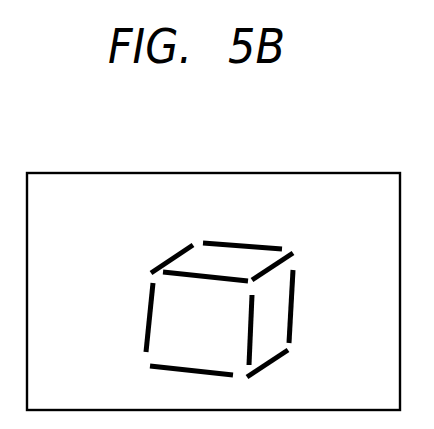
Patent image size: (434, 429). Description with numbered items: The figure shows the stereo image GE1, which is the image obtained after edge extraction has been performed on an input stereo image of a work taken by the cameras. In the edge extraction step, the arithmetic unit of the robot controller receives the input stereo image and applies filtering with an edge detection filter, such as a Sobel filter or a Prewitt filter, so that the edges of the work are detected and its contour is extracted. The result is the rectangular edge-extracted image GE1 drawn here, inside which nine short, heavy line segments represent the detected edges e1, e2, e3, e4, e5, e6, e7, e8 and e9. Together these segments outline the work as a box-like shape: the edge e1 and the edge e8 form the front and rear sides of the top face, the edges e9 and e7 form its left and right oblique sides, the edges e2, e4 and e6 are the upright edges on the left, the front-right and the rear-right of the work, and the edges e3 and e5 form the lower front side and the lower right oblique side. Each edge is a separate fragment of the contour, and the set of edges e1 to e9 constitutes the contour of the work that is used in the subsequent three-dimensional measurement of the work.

The stereo image subjected to edge extraction GE1 is at (357, 185).
The edge e1 is at (212, 275).
The edge e2 is at (147, 318).
The edge e3 is at (175, 373).
The edge e4 is at (248, 330).
The edge e5 is at (275, 358).
The edge e6 is at (295, 312).
The edge e7 is at (288, 262).
The edge e8 is at (268, 243).
The edge e9 is at (182, 248).